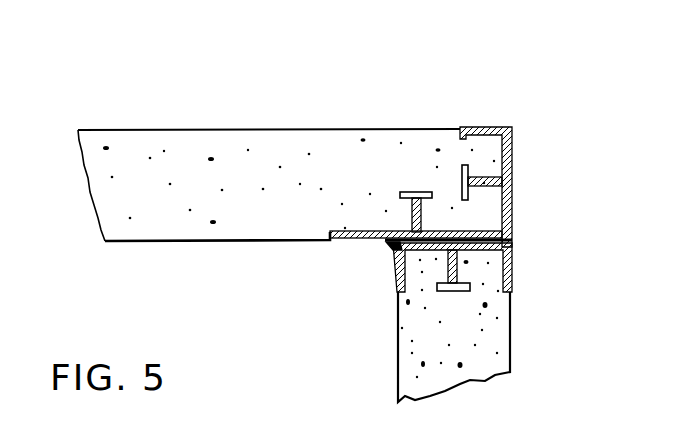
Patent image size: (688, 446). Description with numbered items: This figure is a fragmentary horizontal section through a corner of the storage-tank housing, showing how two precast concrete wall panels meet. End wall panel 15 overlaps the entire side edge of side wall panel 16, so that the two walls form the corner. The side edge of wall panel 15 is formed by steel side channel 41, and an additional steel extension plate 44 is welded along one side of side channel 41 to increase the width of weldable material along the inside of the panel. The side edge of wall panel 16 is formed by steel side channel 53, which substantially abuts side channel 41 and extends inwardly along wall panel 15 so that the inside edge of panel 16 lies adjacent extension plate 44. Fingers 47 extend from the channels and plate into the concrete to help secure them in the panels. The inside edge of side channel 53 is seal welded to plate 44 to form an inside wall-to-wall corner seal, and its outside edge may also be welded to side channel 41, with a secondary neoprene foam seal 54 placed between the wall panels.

The end wall panel 15 is at (277, 137).
The side wall panel 16 is at (500, 337).
The side channel 41 is at (506, 172).
The extension plate 44 is at (350, 240).
The fingers 47 is at (416, 192).
The side channel 53 is at (510, 265).
The secondary neoprene foam seal 54 is at (508, 236).